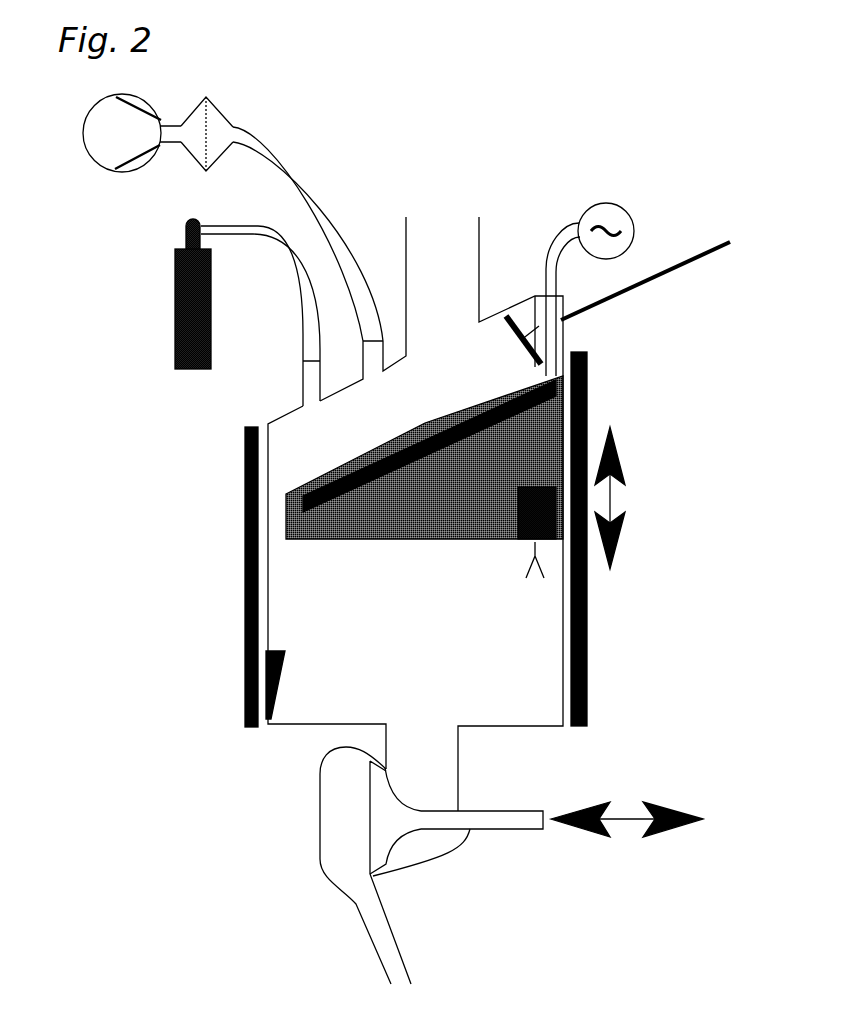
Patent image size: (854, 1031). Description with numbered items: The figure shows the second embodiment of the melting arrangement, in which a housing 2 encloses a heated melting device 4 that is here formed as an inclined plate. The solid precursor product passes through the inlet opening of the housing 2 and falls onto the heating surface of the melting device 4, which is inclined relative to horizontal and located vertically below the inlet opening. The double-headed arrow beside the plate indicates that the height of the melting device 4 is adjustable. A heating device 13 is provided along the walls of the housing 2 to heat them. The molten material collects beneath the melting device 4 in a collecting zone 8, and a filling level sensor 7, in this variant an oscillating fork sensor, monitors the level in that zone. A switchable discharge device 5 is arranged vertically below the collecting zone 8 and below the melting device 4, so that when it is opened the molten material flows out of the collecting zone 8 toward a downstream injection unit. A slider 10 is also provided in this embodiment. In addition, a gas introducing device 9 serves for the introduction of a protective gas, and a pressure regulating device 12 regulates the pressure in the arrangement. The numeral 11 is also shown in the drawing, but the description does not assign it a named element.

The housing 2 is at (508, 300).
The melting device 4 is at (447, 497).
The discharge device 5 is at (480, 813).
The filling level sensor 7 is at (540, 567).
The collecting zone 8 is at (430, 657).
The gas introducing device 9 is at (183, 313).
The slider 10 is at (667, 268).
The wedge 11 is at (257, 674).
The pressure regulating device 12 is at (155, 103).
The heating device 13 is at (242, 572).